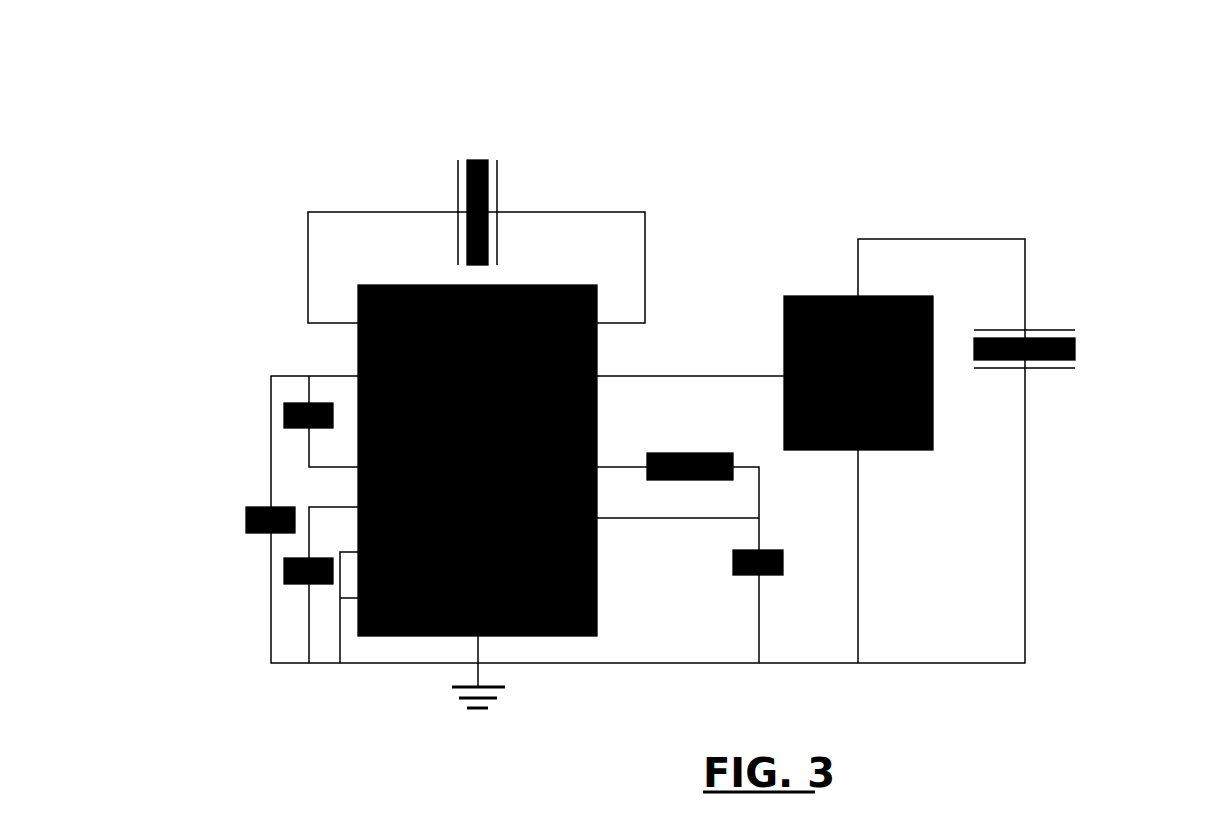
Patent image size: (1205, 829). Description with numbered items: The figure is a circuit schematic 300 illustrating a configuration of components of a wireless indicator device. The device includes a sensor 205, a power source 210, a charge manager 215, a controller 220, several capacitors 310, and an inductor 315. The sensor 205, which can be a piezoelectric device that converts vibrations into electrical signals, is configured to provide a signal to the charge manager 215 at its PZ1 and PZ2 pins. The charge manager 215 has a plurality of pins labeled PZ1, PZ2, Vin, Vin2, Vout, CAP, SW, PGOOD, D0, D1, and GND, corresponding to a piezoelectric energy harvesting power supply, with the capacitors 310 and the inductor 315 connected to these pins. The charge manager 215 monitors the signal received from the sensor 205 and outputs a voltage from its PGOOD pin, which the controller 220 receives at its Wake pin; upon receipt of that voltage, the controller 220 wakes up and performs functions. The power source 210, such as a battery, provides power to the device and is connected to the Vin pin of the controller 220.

The sensor 205 is at (477, 160).
The power source 210 is at (1075, 347).
The charge manager 215 is at (358, 349).
The controller 220 is at (827, 296).
The circuit schematic 300 is at (1038, 208).
The capacitors 310 is at (284, 572).
The inductor 315 is at (693, 480).